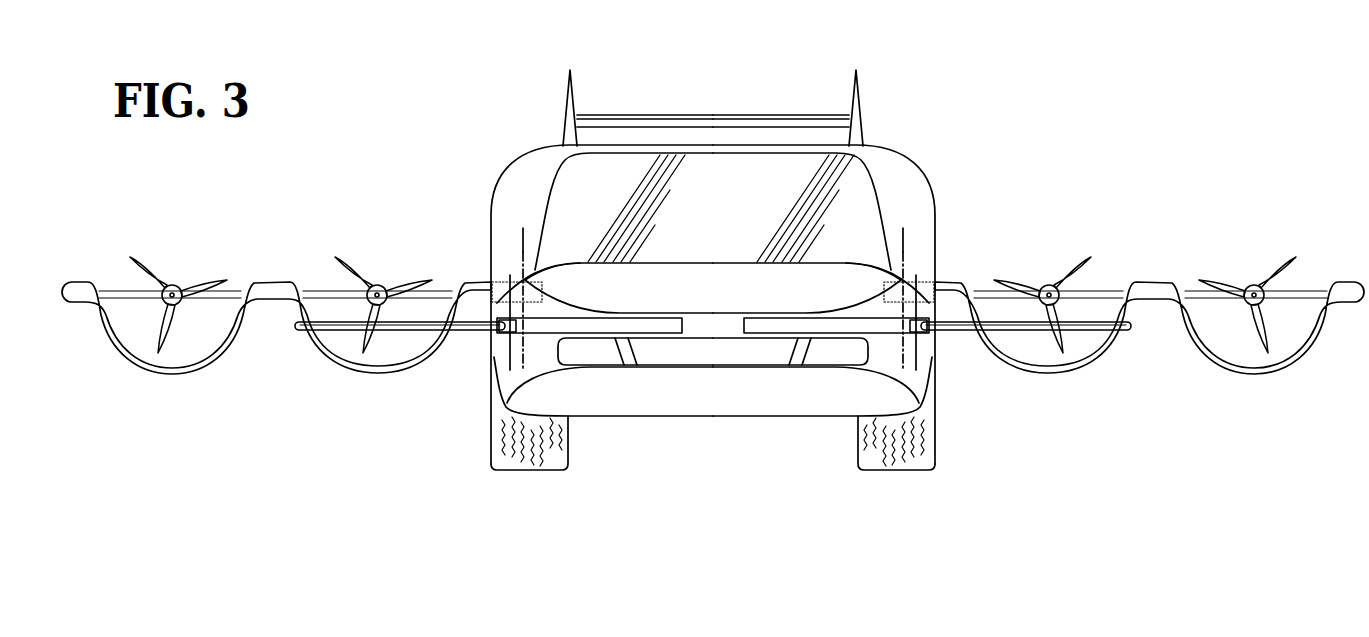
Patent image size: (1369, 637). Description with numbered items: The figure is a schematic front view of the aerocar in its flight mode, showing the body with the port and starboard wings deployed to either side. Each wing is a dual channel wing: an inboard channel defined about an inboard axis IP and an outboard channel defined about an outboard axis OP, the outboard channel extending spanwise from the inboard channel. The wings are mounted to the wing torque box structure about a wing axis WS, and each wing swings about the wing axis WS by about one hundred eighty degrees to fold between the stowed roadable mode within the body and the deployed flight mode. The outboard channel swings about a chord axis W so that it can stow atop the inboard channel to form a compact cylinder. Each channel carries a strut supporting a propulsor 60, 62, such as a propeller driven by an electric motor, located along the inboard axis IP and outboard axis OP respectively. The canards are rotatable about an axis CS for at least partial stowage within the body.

The outboard axis OP is at (172, 285).
The inboard axis IP is at (377, 285).
The chord axis W is at (270, 299).
The wing axis WS is at (521, 229).
The canard stowage axis CS is at (494, 358).
The propulsor 60 is at (368, 303).
The propulsor 62 is at (173, 303).